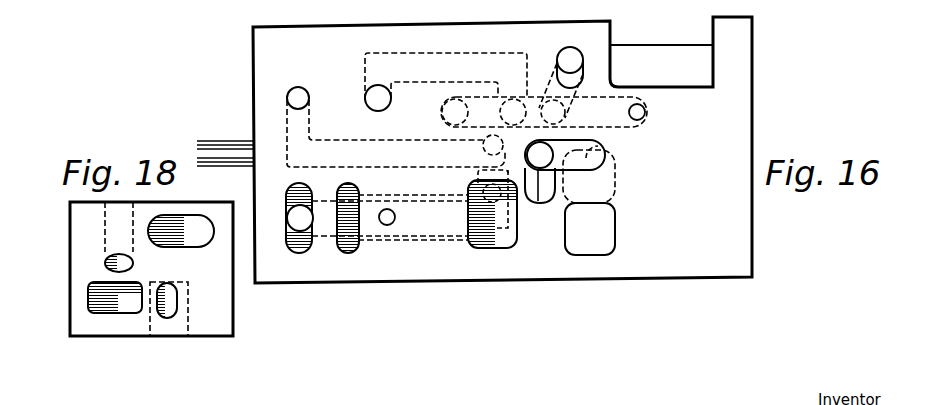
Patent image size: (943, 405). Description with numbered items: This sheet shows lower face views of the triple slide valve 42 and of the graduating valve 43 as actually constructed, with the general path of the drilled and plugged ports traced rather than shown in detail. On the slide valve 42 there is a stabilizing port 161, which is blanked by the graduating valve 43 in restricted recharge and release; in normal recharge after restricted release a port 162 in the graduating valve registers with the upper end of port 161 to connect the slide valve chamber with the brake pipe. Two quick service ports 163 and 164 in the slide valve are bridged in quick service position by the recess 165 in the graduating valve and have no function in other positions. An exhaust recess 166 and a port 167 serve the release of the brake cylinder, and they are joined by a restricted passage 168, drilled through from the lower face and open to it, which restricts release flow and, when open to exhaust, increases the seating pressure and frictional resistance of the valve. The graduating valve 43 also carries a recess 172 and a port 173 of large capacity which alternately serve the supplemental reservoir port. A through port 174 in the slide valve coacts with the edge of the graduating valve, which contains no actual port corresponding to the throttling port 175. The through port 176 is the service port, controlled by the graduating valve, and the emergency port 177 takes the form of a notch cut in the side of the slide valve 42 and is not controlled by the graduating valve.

In FIG. 16, the slide valve 42 is at (253, 103).
In FIG. 18, the graduating valve 43 is at (218, 320).
In FIG. 16, the stabilizing port 161 is at (300, 87).
In FIG. 18, the port 162 is at (134, 263).
In FIG. 16, the quick service port 163 is at (392, 108).
In FIG. 16, the quick service port 164 is at (562, 52).
In FIG. 18, the recess 165 is at (185, 222).
In FIG. 16, the exhaust recess 166 is at (350, 250).
In FIG. 16, the port 167 is at (305, 230).
In FIG. 16, the restricted passage 168 is at (395, 217).
In FIG. 18, the recess 172 is at (117, 312).
In FIG. 18, the port 173 is at (170, 314).
In FIG. 16, the port 174 is at (646, 110).
In FIG. 16, the throttling port 175 is at (590, 143).
In FIG. 16, the through port 176 is at (607, 222).
In FIG. 16, the emergency port 177 is at (705, 61).